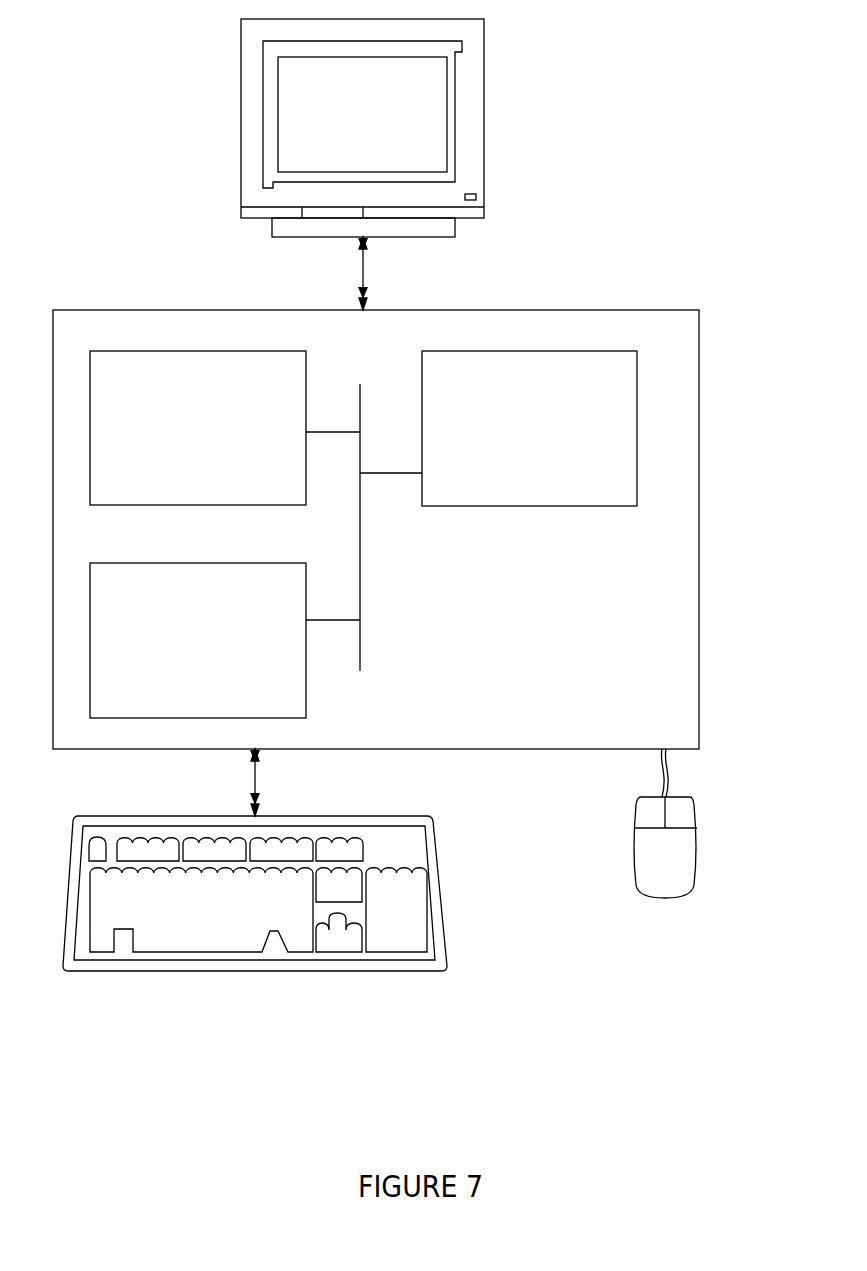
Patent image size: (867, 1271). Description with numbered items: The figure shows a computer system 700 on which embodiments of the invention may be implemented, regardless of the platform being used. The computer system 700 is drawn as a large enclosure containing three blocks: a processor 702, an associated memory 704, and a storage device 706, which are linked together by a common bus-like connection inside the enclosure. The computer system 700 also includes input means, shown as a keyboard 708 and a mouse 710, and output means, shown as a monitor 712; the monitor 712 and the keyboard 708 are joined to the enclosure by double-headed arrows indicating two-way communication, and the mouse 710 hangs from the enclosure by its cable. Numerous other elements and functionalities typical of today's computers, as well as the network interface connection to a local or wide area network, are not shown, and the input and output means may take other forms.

The computer system 700 is at (675, 187).
The processor 702 is at (567, 440).
The memory 704 is at (218, 440).
The storage device 706 is at (215, 651).
The keyboard 708 is at (210, 931).
The mouse 710 is at (683, 868).
The monitor 712 is at (382, 130).